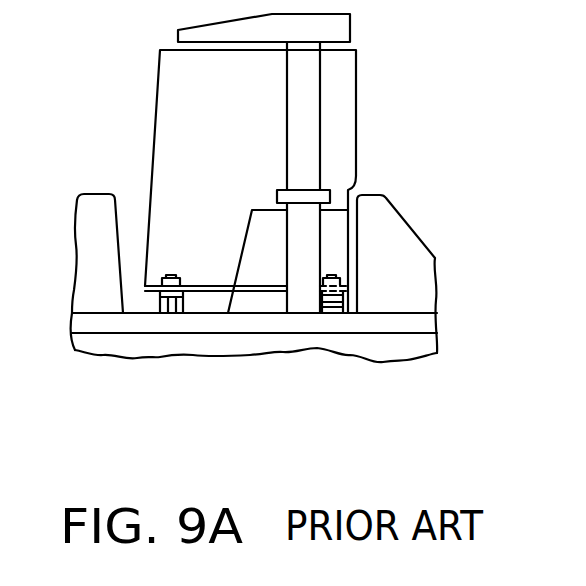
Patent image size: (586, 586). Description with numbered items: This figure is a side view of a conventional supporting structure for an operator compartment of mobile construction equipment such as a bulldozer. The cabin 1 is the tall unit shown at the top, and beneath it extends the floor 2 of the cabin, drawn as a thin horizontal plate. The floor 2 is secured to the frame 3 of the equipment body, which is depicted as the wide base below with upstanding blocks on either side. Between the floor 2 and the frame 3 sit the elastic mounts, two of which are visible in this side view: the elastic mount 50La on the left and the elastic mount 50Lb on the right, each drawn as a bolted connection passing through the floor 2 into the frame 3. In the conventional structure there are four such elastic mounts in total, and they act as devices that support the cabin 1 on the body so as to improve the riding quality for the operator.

The cabin 1 is at (157, 84).
The floor 2 is at (227, 292).
The frame 3 is at (418, 322).
The elastic mount 50La is at (172, 313).
The elastic mount 50Lb is at (332, 296).